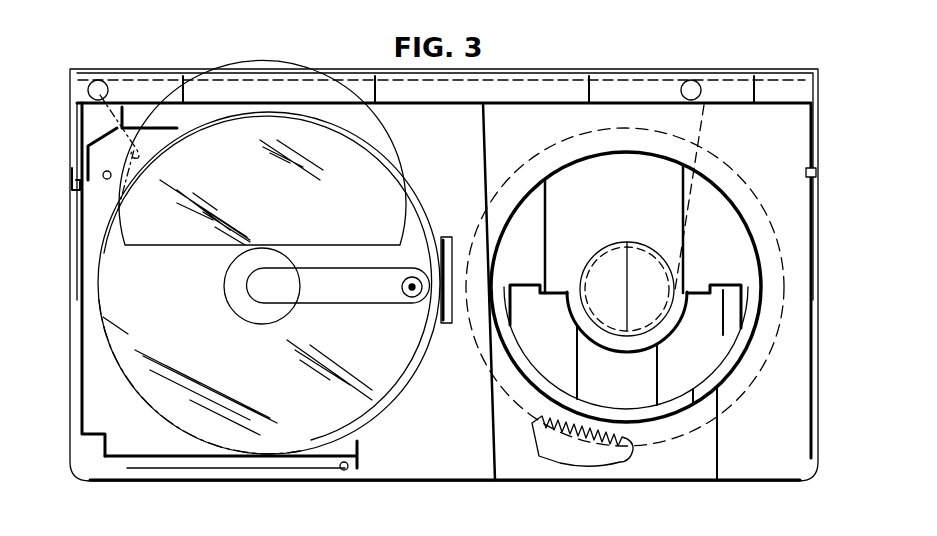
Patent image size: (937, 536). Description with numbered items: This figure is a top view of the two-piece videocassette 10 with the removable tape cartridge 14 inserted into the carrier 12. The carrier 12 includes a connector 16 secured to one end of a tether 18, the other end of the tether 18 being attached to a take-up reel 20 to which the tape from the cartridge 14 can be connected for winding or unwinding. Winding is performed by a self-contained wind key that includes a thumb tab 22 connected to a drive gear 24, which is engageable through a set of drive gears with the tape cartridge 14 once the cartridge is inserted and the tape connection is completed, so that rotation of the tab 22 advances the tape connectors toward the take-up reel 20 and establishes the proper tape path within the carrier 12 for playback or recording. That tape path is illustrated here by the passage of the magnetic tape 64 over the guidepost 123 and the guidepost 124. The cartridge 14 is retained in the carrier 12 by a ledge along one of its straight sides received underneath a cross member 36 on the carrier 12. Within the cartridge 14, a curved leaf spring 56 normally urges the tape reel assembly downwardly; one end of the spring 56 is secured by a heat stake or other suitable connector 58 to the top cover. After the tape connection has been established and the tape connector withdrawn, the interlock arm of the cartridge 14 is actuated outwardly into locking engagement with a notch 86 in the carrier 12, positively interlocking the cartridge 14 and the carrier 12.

The two-piece videocassette 10 is at (63, 258).
The carrier 12 is at (791, 436).
The tape cartridge 14 is at (120, 411).
The connector 16 is at (112, 128).
The tether 18 is at (128, 78).
The take-up reel 20 is at (780, 245).
The thumb tab 22 is at (702, 338).
The drive gear 24 is at (589, 449).
The cross member 36 is at (160, 483).
The curved leaf spring 56 is at (346, 300).
The connector (heat stake) 58 is at (418, 297).
The magnetic tape 64 is at (697, 130).
The notch 86 is at (72, 206).
The guidepost 123 is at (97, 81).
The guidepost 124 is at (692, 81).